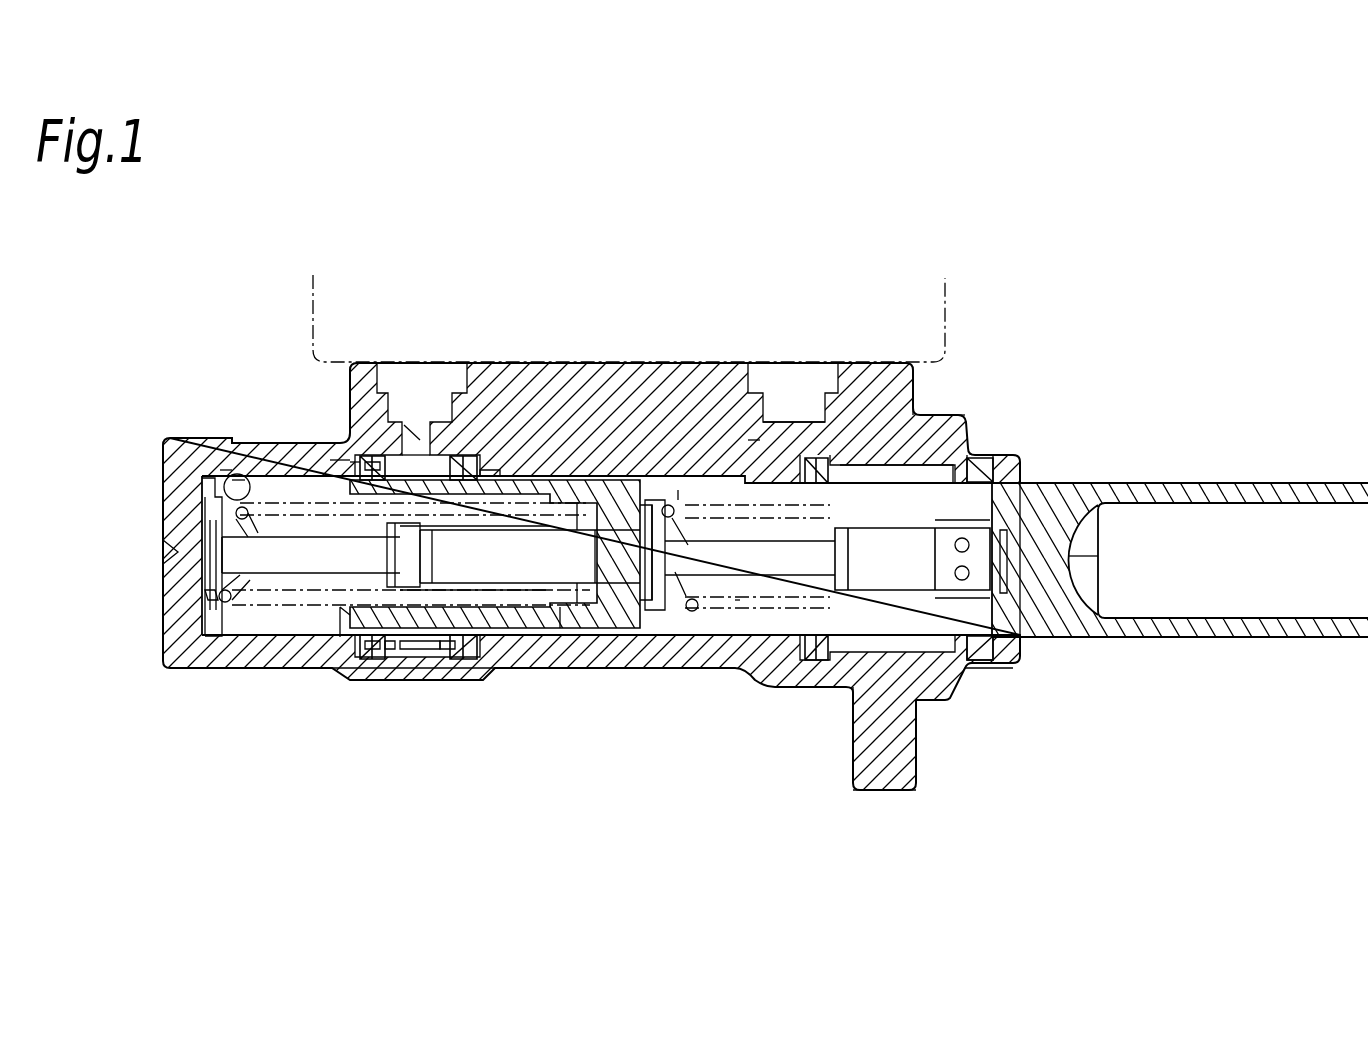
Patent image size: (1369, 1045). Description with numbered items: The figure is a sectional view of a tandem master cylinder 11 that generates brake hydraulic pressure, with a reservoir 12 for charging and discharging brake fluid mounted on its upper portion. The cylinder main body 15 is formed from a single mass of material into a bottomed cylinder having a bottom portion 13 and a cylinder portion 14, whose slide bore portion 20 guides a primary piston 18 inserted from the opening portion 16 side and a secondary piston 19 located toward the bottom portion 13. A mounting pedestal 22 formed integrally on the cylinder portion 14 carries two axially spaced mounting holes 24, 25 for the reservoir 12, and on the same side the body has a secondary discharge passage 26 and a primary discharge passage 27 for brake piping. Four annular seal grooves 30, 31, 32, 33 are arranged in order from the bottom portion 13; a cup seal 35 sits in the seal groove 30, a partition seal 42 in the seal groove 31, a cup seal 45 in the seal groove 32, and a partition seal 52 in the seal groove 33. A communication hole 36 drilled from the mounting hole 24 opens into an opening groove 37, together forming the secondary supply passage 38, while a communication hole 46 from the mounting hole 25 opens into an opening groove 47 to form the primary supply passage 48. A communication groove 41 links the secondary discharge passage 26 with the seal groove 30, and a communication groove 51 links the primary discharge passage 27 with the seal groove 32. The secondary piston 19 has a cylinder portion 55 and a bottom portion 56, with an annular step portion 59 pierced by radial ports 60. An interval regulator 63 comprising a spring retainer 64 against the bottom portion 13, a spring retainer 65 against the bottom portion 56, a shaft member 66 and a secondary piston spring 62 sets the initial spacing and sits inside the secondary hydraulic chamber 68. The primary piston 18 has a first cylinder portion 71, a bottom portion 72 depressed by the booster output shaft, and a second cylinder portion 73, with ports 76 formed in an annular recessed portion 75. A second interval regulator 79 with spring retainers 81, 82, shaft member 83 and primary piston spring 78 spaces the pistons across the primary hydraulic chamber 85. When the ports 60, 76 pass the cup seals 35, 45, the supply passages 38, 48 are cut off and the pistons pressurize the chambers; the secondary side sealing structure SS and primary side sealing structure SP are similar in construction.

The master cylinder 11 is at (1025, 397).
The reservoir 12 is at (952, 290).
The bottom portion 13 is at (170, 495).
The cylinder portion 14 is at (620, 670).
The cylinder main body 15 is at (305, 672).
The opening portion 16 is at (1030, 640).
The primary piston 18 is at (1178, 479).
The secondary piston 19 is at (530, 650).
The slide bore portion 20 is at (488, 650).
The mounting pedestal 22 is at (358, 405).
The mounting hole 24 is at (378, 452).
The mounting hole 25 is at (830, 375).
The secondary discharge passage 26 is at (228, 470).
The primary discharge passage 27 is at (535, 478).
The seal groove 30 is at (335, 460).
The seal groove 31 is at (476, 475).
The seal groove 32 is at (920, 410).
The seal groove 33 is at (1010, 460).
The cup seal 35 is at (374, 657).
The communication hole 36 is at (365, 455).
The opening groove 37 is at (418, 657).
The secondary supply passage 38 is at (360, 462).
The communication groove 41 is at (240, 478).
The partition seal 42 is at (452, 657).
The cup seal 45 is at (802, 652).
The communication hole 46 is at (870, 462).
The opening groove 47 is at (912, 657).
The primary supply passage 48 is at (955, 436).
The communication groove 51 is at (712, 548).
The partition seal 52 is at (983, 650).
The cylinder portion 55 is at (522, 634).
The bottom portion 56 is at (598, 614).
The step portion 59 is at (342, 652).
The port 60 is at (415, 455).
The secondary piston spring 62 is at (222, 607).
The interval regulator 63 is at (205, 600).
The spring retainer 64 is at (190, 640).
The spring retainer 65 is at (566, 640).
The shaft member 66 is at (258, 637).
The secondary hydraulic chamber 68 is at (290, 634).
The first cylinder portion 71 is at (880, 770).
The bottom portion 72 is at (1090, 617).
The second cylinder portion 73 is at (1210, 640).
The recessed portion 75 is at (775, 647).
The port 76 is at (812, 458).
The primary piston spring 78 is at (703, 632).
The interval regulator 79 is at (735, 617).
The spring retainer 81 is at (662, 632).
The spring retainer 82 is at (990, 470).
The shaft member 83 is at (678, 500).
The primary hydraulic chamber 85 is at (603, 500).
The secondary side sealing structure SS is at (405, 425).
The primary side sealing structure SP is at (752, 470).